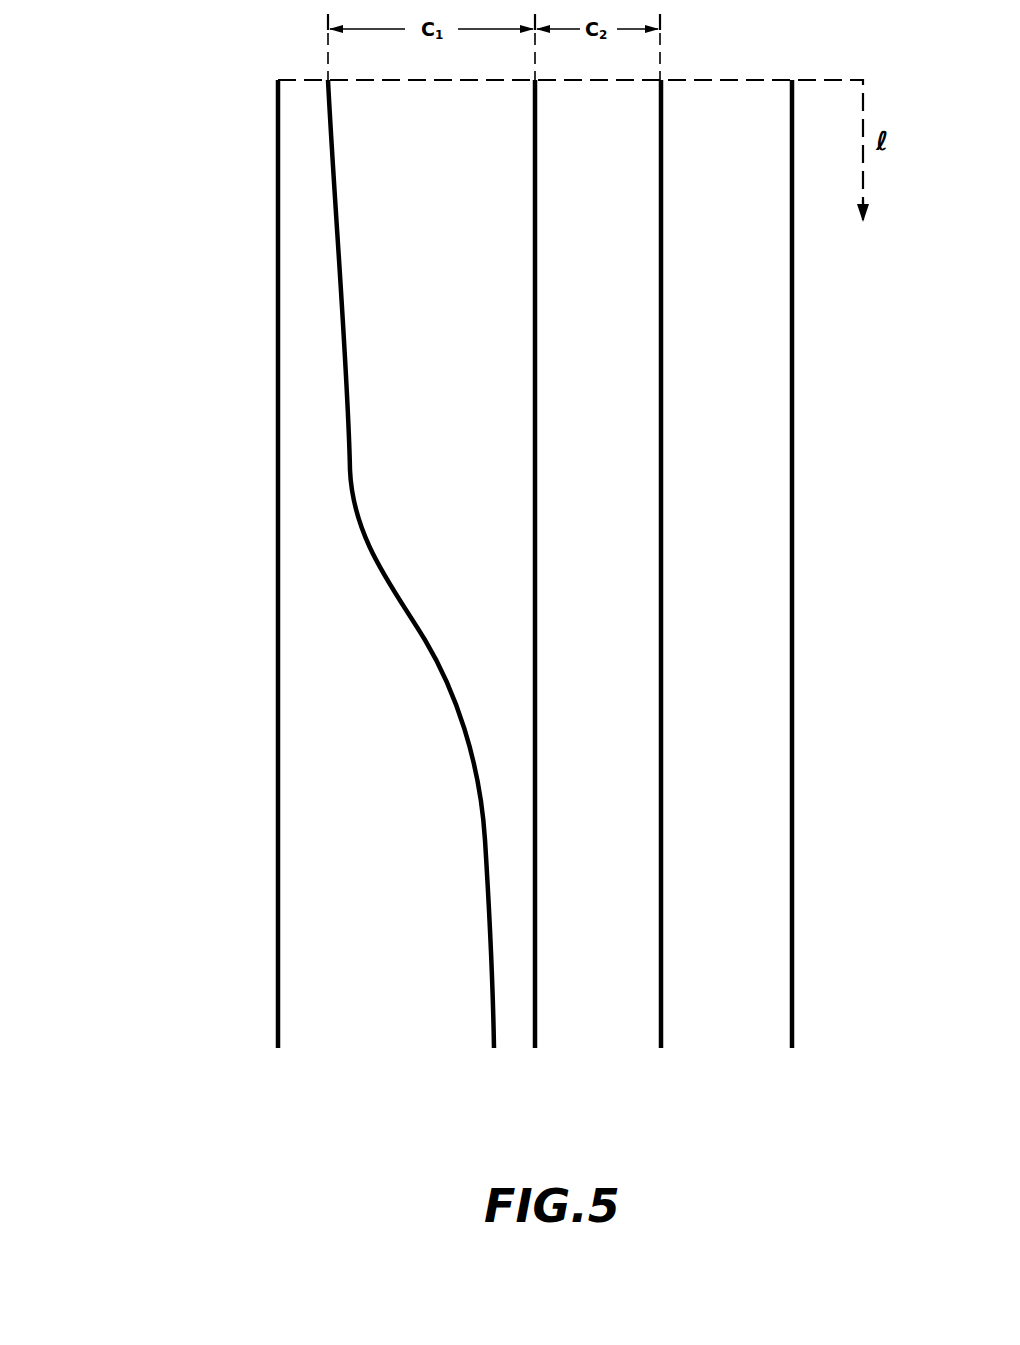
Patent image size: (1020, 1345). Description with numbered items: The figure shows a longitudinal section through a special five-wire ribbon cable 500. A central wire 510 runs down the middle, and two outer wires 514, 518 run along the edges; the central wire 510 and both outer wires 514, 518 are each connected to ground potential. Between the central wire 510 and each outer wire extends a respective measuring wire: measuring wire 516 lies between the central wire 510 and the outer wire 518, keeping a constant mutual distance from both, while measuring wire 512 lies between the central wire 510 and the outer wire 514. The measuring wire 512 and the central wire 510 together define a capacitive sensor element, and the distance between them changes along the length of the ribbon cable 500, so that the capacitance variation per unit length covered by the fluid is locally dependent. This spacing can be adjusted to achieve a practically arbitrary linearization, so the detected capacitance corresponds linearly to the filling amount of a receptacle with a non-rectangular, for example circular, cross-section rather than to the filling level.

The ribbon cable 500 is at (254, 902).
The central wire 510 is at (536, 1010).
The measuring wire 512 is at (492, 1012).
The outer wire 514 is at (279, 1012).
The measuring wire 516 is at (662, 1000).
The outer wire 518 is at (793, 1000).